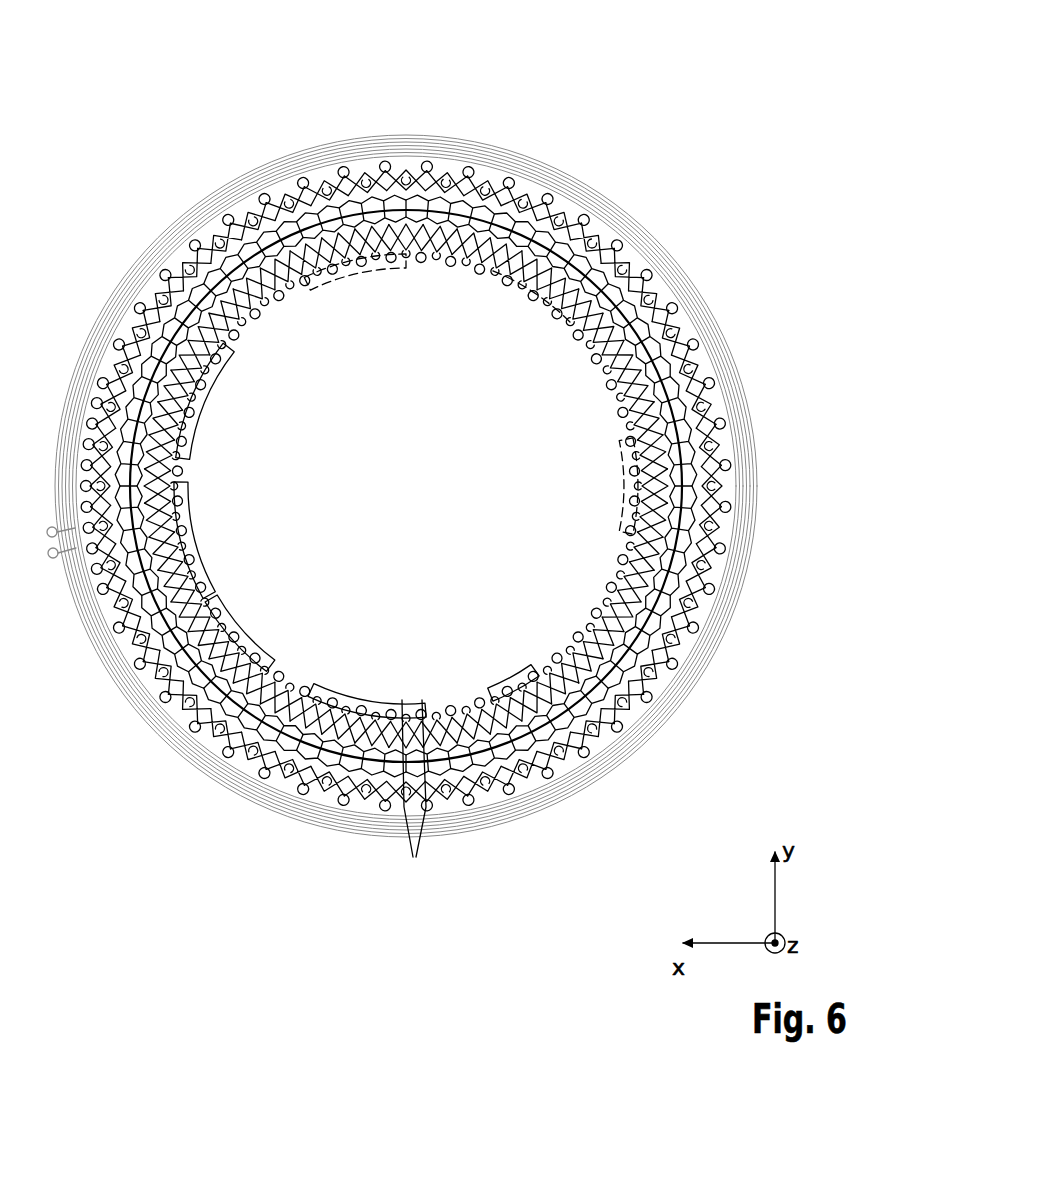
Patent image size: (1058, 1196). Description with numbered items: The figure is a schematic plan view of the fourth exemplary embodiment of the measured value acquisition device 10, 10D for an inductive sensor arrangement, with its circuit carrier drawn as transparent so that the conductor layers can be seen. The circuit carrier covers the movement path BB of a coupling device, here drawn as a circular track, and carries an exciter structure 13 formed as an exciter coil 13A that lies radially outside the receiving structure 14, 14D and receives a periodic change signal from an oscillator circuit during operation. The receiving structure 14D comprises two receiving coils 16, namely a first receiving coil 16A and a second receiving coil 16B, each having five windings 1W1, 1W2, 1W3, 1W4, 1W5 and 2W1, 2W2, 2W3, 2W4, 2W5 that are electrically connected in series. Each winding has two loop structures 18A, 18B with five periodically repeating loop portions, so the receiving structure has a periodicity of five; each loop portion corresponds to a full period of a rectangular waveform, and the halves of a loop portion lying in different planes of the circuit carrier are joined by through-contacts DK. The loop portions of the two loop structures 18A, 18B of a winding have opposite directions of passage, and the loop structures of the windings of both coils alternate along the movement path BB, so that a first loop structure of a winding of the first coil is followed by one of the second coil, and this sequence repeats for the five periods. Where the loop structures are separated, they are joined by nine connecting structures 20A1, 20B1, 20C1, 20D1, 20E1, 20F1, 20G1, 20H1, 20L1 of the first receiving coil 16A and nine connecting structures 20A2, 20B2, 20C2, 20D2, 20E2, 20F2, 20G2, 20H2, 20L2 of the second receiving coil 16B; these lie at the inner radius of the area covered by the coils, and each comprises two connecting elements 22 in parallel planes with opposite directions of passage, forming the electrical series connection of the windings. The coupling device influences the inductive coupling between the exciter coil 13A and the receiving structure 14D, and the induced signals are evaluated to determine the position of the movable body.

The measured value acquisition device 10 is at (402, 419).
The measured value acquisition device 10D is at (183, 102).
The exciter structure 13 is at (386, 498).
The exciter coil 13A is at (130, 720).
The receiving structure 14 is at (406, 486).
The receiving structure 14D is at (160, 272).
The receiving coil 16 is at (390, 407).
The first receiving coil 16A is at (285, 92).
The second receiving coil 16B is at (142, 148).
The first loop structure 18A is at (599, 144).
The second loop structure 18B is at (653, 279).
The first winding of the first receiving coil 1W1 is at (437, 188).
The second winding of the first receiving coil 1W2 is at (479, 195).
The third winding of the first receiving coil 1W3 is at (518, 208).
The fourth winding of the first receiving coil 1W4 is at (565, 232).
The fifth winding of the first receiving coil 1W5 is at (607, 263).
The first winding of the second receiving coil 2W1 is at (458, 191).
The second winding of the second receiving coil 2W2 is at (499, 201).
The third winding of the second receiving coil 2W3 is at (542, 219).
The fourth winding of the second receiving coil 2W4 is at (587, 246).
The fifth winding of the second receiving coil 2W5 is at (622, 278).
The connecting structure 20A1 is at (245, 340).
The connecting structure 20B1 is at (414, 300).
The connecting structure 20C1 is at (372, 270).
The connecting structure 20D1 is at (532, 322).
The connecting structure 20E1 is at (414, 272).
The connecting structure 20F1 is at (605, 413).
The connecting structure 20G1 is at (592, 383).
The connecting structure 20H1 is at (622, 458).
The connecting structure 20L1 is at (620, 490).
The connecting structure 20A2 is at (508, 672).
The connecting structure 20B2 is at (410, 690).
The connecting structure 20C2 is at (342, 687).
The connecting structure 20D2 is at (287, 650).
The connecting structure 20E2 is at (246, 618).
The connecting structure 20F2 is at (205, 543).
The connecting structure 20G2 is at (200, 510).
The connecting structure 20H2 is at (194, 441).
The connecting structure 20L2 is at (208, 388).
The connecting element 22 is at (245, 330).
The movement path BB is at (593, 683).
The through-contact DK is at (415, 795).